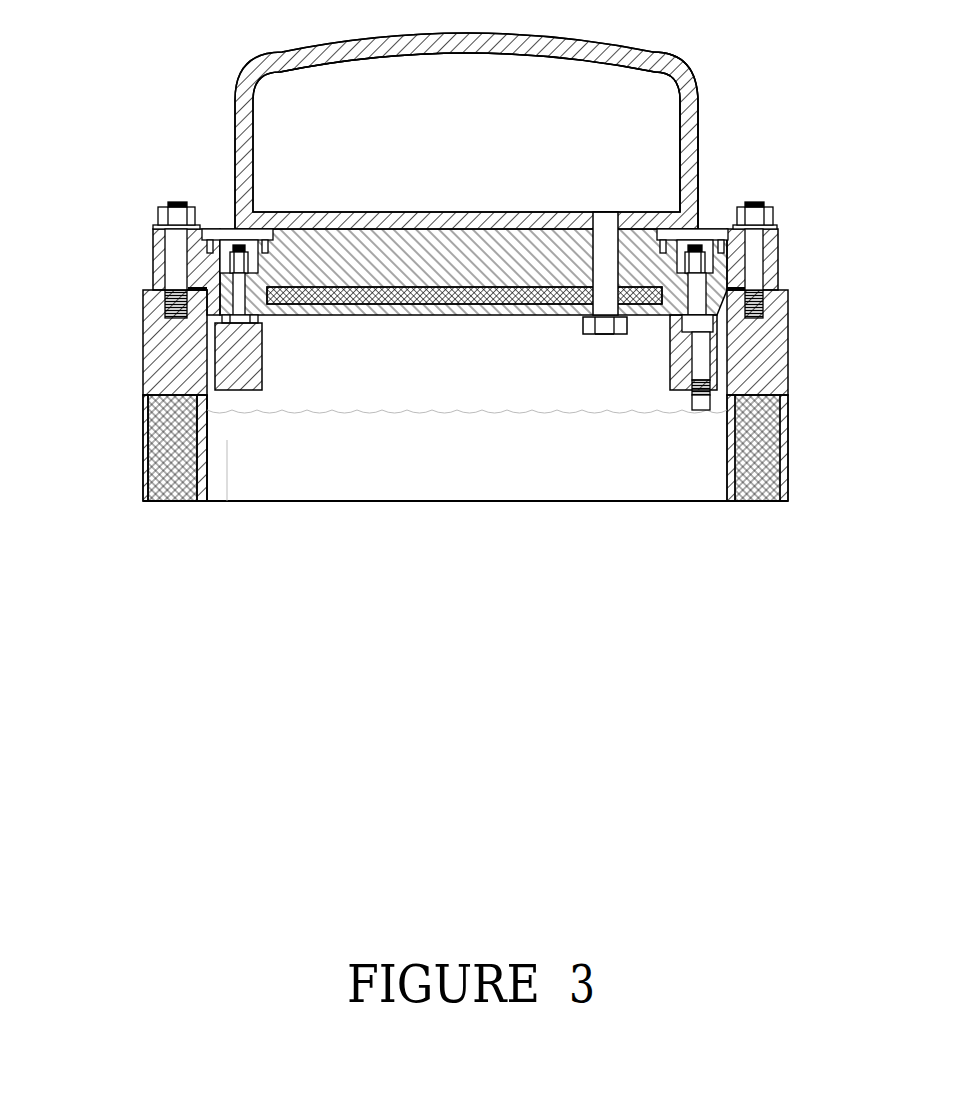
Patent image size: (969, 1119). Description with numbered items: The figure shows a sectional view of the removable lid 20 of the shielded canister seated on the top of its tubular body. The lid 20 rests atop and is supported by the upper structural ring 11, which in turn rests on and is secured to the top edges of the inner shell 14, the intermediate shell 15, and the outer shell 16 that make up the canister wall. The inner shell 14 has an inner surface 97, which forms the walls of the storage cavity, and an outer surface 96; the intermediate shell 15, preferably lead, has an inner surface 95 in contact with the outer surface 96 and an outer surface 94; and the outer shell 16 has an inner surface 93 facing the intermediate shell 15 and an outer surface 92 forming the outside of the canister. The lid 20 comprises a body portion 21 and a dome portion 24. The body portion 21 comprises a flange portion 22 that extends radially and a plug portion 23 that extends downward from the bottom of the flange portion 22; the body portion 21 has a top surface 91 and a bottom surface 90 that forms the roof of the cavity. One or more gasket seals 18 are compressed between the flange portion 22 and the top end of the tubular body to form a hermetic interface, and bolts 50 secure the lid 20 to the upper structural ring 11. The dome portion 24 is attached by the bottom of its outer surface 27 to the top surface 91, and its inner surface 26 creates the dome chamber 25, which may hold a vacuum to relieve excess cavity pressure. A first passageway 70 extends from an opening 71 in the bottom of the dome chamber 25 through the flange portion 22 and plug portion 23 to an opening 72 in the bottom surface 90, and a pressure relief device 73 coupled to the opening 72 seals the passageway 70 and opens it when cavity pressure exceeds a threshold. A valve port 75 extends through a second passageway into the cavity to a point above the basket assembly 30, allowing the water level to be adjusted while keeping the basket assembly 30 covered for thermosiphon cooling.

The upper structural ring 11 is at (788, 328).
The inner shell 14 is at (729, 501).
The intermediate shell 15 is at (777, 501).
The outer shell 16 is at (785, 501).
The gasket seal 18 is at (188, 315).
The removable lid 20 is at (221, 161).
The body portion 21 is at (797, 248).
The flange portion 22 is at (153, 252).
The plug portion 23 is at (209, 296).
The dome portion 24 is at (690, 158).
The dome chamber 25 is at (617, 103).
The inner surface of the dome portion 26 is at (233, 92).
The outer surface of the dome portion 27 is at (233, 127).
The basket assembly 30 is at (311, 488).
The bolts 50 is at (775, 213).
The first passageway 70 is at (607, 243).
The opening in the bottom of the dome chamber 71 is at (603, 213).
The opening in the bottom surface of the body portion 72 is at (591, 335).
The pressure relief device 73 is at (601, 335).
The valve port 75 is at (703, 368).
The bottom surface of the body portion 90 is at (408, 317).
The top surface of the body portion 91 is at (710, 222).
The outer surface of the outer shell 92 is at (144, 421).
The inner surface of the outer shell 93 is at (152, 482).
The outer surface of the intermediate shell 94 is at (150, 450).
The inner surface of the intermediate shell 95 is at (193, 482).
The outer surface of the inner shell 96 is at (195, 450).
The inner surface of the inner shell 97 is at (207, 462).